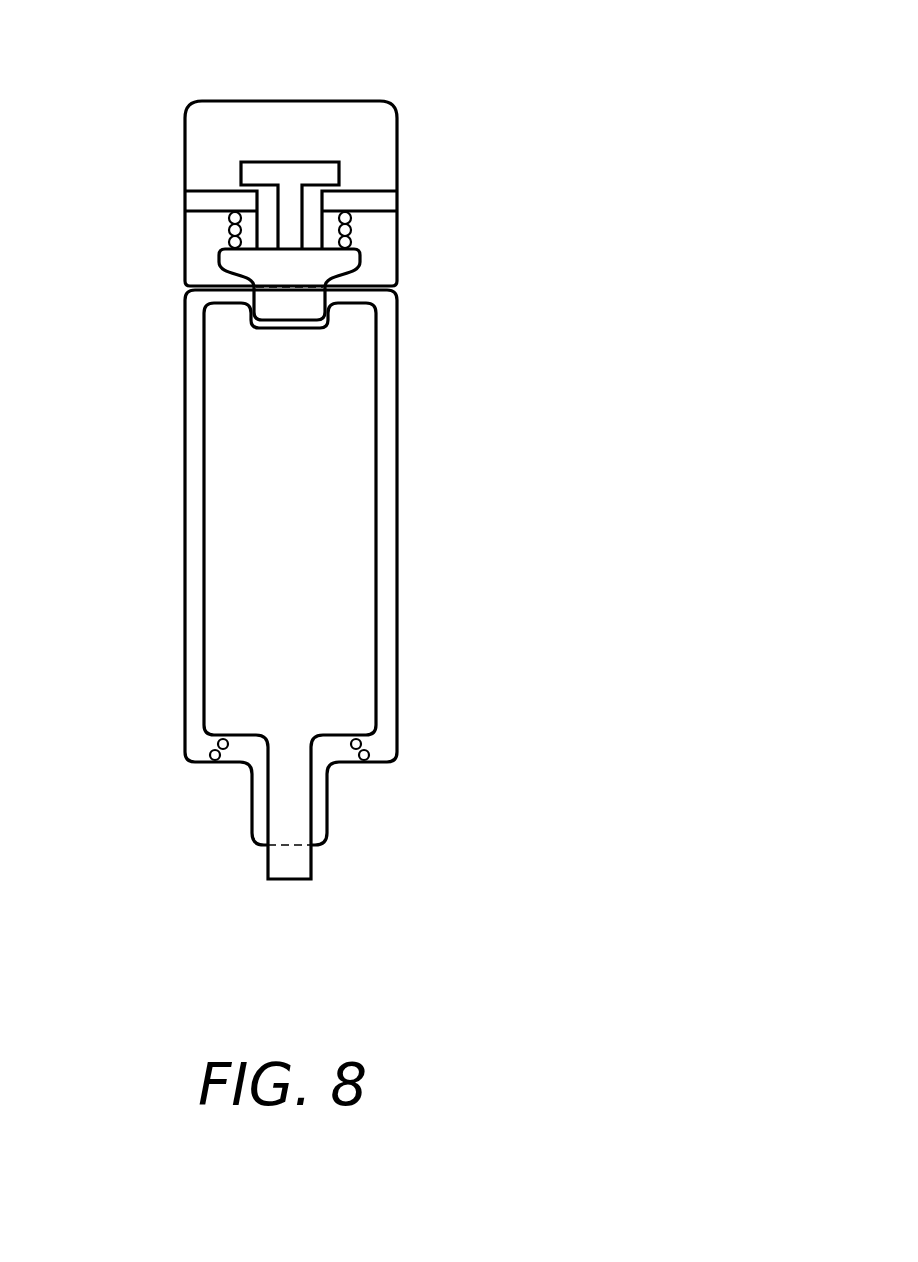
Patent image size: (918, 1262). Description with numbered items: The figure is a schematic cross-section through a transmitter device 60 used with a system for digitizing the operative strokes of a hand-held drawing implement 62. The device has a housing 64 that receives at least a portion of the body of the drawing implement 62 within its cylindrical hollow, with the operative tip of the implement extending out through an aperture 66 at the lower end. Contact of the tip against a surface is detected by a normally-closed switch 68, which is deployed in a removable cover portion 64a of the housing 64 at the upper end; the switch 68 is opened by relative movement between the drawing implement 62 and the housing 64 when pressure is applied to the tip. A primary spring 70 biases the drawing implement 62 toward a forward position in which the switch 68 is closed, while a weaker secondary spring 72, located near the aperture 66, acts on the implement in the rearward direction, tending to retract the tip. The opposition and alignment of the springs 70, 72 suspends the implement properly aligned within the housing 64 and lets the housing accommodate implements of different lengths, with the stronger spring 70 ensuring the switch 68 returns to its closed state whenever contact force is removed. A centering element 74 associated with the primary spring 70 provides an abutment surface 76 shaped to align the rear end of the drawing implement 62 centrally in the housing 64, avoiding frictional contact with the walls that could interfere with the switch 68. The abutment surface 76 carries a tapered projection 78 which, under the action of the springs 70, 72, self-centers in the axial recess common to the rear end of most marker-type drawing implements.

The transmitter device 60 is at (519, 75).
The hand-held drawing implement 62 is at (325, 537).
The housing 64 is at (399, 418).
The removable cover portion 64a is at (400, 147).
The aperture 66 is at (315, 822).
The normally-closed switch 68 is at (236, 183).
The primary spring 70 is at (360, 229).
The secondary spring 72 is at (363, 752).
The centering element 74 is at (250, 267).
The abutment surface 76 is at (243, 288).
The tapered projection 78 is at (292, 308).